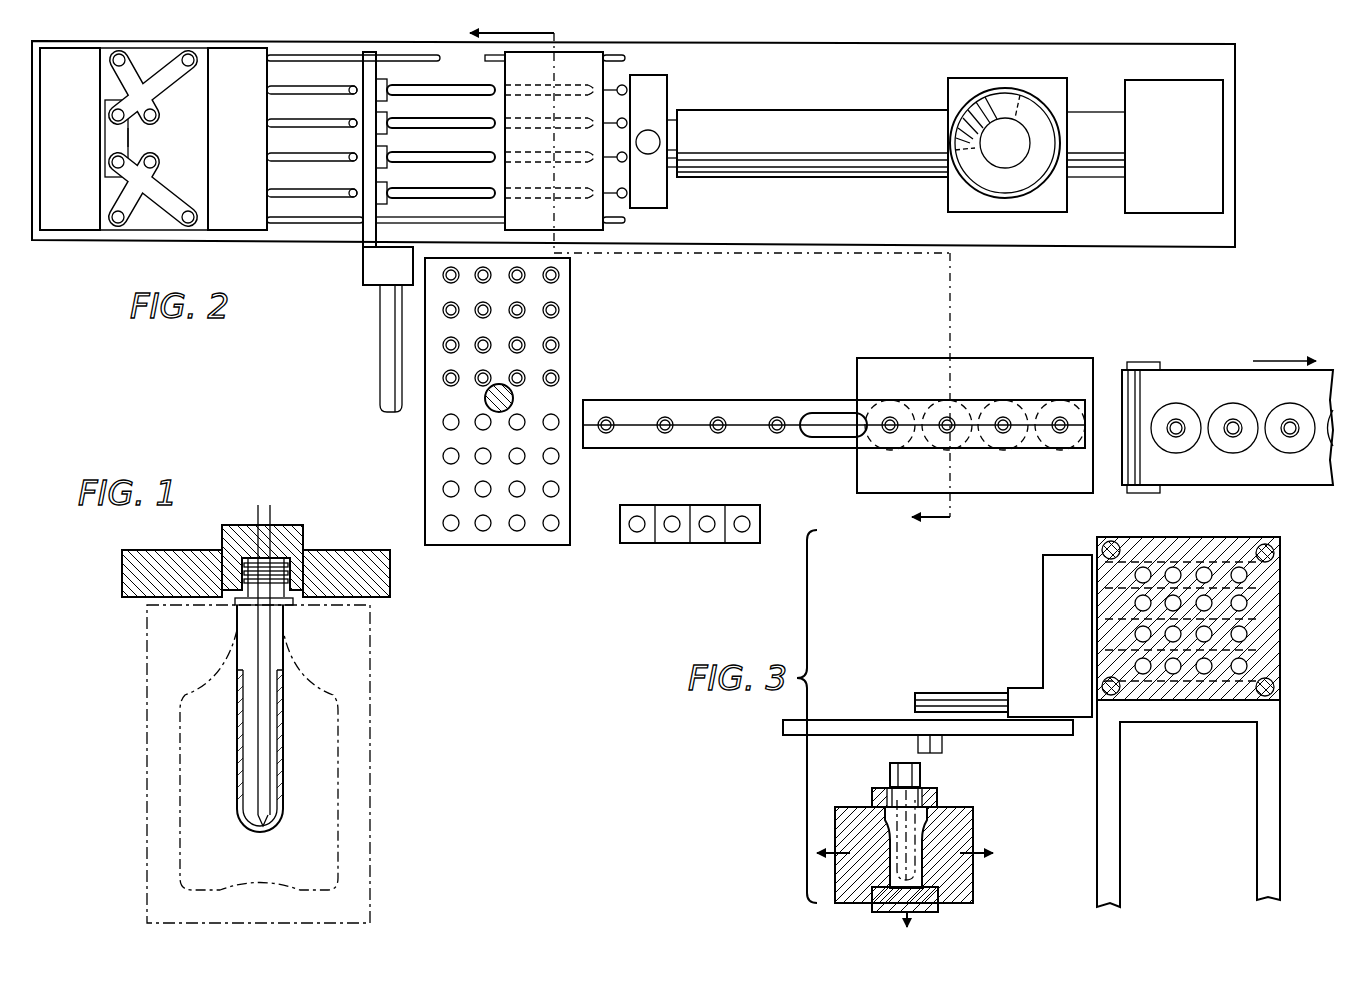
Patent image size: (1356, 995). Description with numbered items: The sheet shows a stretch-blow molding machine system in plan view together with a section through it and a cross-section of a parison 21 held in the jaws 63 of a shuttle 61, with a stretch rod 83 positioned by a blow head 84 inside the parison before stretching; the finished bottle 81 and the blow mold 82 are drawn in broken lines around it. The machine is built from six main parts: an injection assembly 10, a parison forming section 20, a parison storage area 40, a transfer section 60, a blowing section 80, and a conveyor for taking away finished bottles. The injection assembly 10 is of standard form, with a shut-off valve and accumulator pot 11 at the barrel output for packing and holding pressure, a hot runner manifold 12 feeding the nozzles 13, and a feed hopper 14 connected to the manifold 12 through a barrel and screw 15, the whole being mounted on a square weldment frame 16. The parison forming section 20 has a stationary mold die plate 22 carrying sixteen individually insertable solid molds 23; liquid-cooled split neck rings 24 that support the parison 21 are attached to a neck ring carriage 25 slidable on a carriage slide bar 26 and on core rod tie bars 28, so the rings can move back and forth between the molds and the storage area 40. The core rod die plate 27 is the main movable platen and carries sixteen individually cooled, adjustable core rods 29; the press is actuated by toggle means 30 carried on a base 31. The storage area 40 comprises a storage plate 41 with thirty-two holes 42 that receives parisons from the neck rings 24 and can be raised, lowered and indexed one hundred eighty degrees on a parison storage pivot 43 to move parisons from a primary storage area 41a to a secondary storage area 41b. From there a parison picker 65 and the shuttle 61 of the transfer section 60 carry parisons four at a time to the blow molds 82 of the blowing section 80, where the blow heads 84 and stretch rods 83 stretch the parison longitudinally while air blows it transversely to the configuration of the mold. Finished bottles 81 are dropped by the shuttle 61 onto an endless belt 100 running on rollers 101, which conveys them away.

In FIG. 2, the injection assembly 10 is at (1112, 260).
In FIG. 2, the shut-off valve and accumulator pot 11 is at (652, 140).
In FIG. 2, the hot runner manifold 12 is at (652, 78).
In FIG. 2, the feeding nozzles 13 is at (640, 88).
In FIG. 2, the feed hopper 14 is at (1030, 176).
In FIG. 2, the barrel and screw 15 is at (833, 123).
In FIG. 2, the square weldment frame 16 is at (1235, 235).
In FIG. 2, the parison forming section 20 is at (641, 229).
In FIG. 2, the parison 21 is at (420, 156).
In FIG. 1, the parison 21 is at (250, 648).
In FIG. 2, the stationary mold die plate 22 is at (587, 220).
In FIG. 2, the solid molds 23 is at (557, 72).
In FIG. 3, the solid molds 23 is at (1245, 632).
In FIG. 2, the neck rings 24 is at (388, 93).
In FIG. 2, the neck ring carriage 25 is at (373, 280).
In FIG. 3, the neck ring carriage 25 is at (1050, 612).
In FIG. 2, the carriage slide bar 26 is at (380, 375).
In FIG. 3, the carriage slide bar 26 is at (957, 698).
In FIG. 2, the core rod die plate 27 is at (252, 152).
In FIG. 2, the core rod tie bars 28 is at (283, 63).
In FIG. 2, the core rods 29 is at (320, 163).
In FIG. 2, the toggle means 30 is at (138, 198).
In FIG. 2, the base 31 is at (65, 210).
In FIG. 2, the parison storage area 40 is at (542, 429).
In FIG. 2, the storage plate 41 is at (572, 383).
In FIG. 3, the storage plate 41 is at (858, 722).
In FIG. 2, the primary storage area 41a is at (562, 292).
In FIG. 2, the secondary storage area 41b is at (562, 507).
In FIG. 2, the holes 42 is at (557, 343).
In FIG. 2, the parison storage pivot 43 is at (487, 397).
In FIG. 2, the transfer section 60 is at (656, 566).
In FIG. 2, the shuttle 61 is at (753, 437).
In FIG. 1, the shuttle 61 is at (378, 580).
In FIG. 3, the shuttle 61 is at (940, 795).
In FIG. 1, the jaws 63 is at (300, 600).
In FIG. 2, the parison picker 65 is at (716, 545).
In FIG. 2, the blowing section 80 is at (977, 398).
In FIG. 3, the blowing section 80 is at (778, 817).
In FIG. 2, the bottle 81 is at (1243, 412).
In FIG. 1, the bottle 81 is at (340, 795).
In FIG. 2, the blow mold 82 is at (1060, 362).
In FIG. 1, the blow mold 82 is at (357, 872).
In FIG. 3, the blow mold 82 is at (972, 823).
In FIG. 1, the stretch rod 83 is at (268, 748).
In FIG. 1, the blow head 84 is at (224, 542).
In FIG. 3, the blow head 84 is at (892, 780).
In FIG. 2, the endless belt 100 is at (1268, 491).
In FIG. 2, the rollers 101 is at (1150, 362).